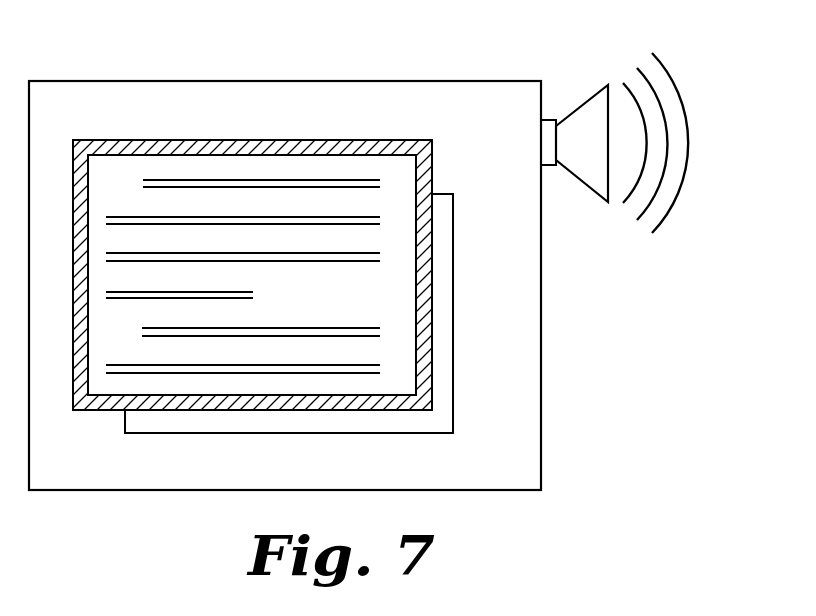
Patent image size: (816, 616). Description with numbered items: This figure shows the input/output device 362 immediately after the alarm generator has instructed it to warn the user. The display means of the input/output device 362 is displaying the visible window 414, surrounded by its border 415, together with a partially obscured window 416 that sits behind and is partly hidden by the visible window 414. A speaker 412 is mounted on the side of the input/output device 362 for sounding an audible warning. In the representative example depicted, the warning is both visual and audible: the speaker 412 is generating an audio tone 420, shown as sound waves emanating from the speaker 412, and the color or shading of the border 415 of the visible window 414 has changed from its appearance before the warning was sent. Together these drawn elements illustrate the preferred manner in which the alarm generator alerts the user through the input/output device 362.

The input/output device 362 is at (541, 470).
The speaker 412 is at (578, 107).
The visible window 414 is at (380, 140).
The border 415 is at (261, 140).
The partially obscured window 416 is at (441, 194).
The audio tone 420 is at (669, 75).